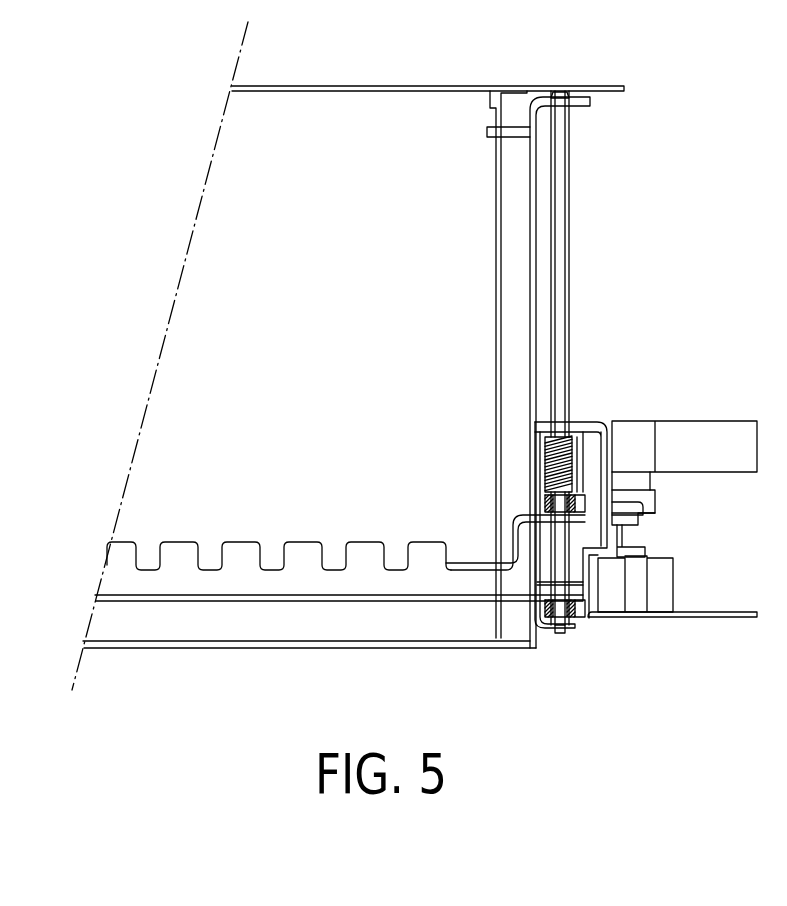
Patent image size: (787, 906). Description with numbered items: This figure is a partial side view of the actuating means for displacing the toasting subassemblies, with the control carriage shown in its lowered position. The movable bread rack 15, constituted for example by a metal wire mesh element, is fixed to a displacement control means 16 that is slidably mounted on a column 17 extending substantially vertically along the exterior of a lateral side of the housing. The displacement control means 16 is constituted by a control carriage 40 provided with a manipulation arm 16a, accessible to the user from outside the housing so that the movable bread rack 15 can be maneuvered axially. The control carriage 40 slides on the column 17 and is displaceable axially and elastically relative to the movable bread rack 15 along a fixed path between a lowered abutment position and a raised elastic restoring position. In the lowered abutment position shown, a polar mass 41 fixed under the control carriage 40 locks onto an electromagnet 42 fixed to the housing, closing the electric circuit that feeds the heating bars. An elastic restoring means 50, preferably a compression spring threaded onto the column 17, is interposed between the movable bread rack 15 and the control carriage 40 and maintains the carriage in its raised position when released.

The movable bread rack 15 is at (287, 583).
The displacement control means 16 is at (723, 412).
The manipulation arm 16a is at (732, 458).
The column 17 is at (562, 205).
The control carriage 40 is at (604, 454).
The polar mass 41 is at (632, 548).
The electromagnet 42 is at (665, 580).
The elastic restoring means 50 is at (547, 470).